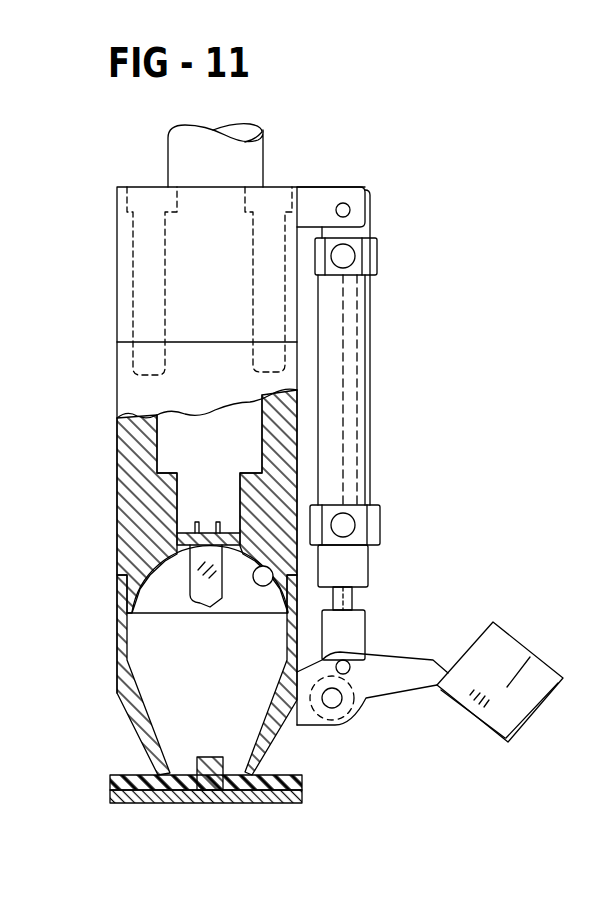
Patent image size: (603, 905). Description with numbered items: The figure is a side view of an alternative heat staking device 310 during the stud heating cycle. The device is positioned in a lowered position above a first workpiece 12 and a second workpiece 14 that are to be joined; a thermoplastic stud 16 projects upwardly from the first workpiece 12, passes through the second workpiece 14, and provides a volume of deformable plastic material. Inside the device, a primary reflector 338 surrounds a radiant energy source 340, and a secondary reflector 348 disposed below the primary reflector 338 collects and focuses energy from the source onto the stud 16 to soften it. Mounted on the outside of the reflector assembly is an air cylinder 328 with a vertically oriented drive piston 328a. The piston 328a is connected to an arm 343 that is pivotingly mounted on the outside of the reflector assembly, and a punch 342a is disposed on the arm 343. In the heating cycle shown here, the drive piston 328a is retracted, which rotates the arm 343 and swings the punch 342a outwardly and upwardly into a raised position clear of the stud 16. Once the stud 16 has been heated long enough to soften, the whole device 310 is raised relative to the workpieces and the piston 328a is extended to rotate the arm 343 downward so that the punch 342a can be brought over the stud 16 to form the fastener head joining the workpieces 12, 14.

The heat staking device 310 is at (410, 191).
The air cylinder 328 is at (353, 355).
The drive piston 328a is at (352, 594).
The primary reflector 338 is at (287, 578).
The radiant energy source 340 is at (190, 590).
The arm 343 is at (407, 657).
The punch 342a is at (520, 638).
The secondary reflector 348 is at (150, 722).
The stud 16 is at (210, 757).
The second workpiece 14 is at (302, 778).
The first workpiece 12 is at (302, 800).